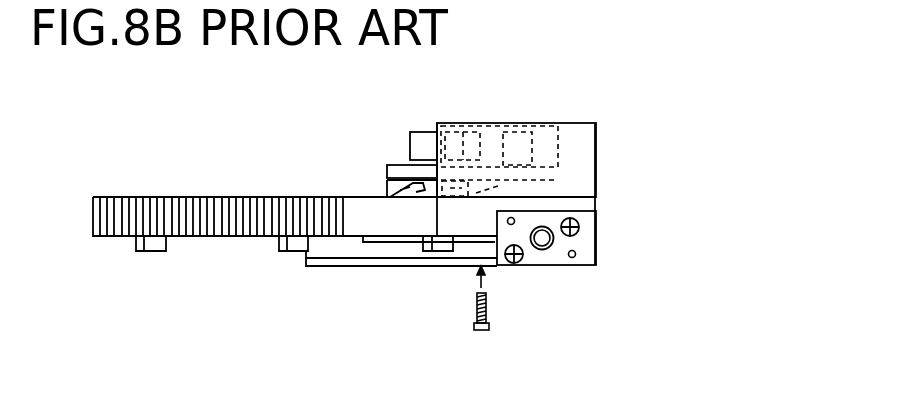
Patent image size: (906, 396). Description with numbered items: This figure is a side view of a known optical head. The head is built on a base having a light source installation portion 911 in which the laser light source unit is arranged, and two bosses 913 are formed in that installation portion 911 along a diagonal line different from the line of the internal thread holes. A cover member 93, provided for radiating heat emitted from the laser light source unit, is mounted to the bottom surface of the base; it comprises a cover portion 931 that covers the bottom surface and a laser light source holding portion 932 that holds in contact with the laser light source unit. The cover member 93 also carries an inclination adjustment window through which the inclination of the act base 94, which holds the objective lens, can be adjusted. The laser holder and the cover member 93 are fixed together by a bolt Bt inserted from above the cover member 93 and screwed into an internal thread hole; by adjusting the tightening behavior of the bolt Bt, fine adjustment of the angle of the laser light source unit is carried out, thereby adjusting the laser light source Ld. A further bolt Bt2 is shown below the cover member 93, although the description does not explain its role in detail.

The cover member 93 is at (362, 259).
The cover portion 931 is at (327, 258).
The laser light source holding portion 932 is at (590, 218).
The light source installation portion 911 is at (557, 257).
The boss 913 is at (577, 257).
The act base 94 is at (405, 172).
The bolt Bt is at (540, 312).
The bolt Bt2 is at (475, 320).
The laser light source Ld is at (548, 227).